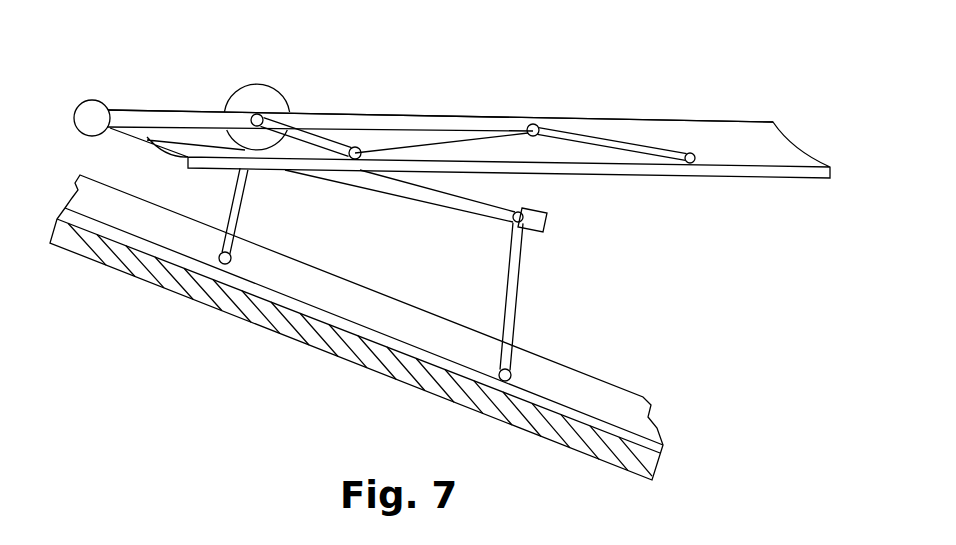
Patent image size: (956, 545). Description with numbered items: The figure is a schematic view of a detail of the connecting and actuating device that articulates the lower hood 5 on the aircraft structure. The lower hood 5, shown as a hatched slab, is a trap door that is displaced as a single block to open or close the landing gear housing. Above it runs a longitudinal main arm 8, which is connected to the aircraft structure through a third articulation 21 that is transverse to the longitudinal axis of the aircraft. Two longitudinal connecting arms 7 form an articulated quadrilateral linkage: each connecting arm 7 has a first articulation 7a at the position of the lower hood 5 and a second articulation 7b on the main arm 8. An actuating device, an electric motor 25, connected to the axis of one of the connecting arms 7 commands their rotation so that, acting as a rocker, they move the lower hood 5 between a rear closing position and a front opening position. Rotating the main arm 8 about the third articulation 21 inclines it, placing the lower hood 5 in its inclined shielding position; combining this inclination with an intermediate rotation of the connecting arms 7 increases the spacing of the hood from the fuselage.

The lower hood 5 is at (258, 315).
The connecting arm 7 is at (247, 190).
The first articulation 7a is at (355, 150).
The second articulation 7b is at (257, 115).
The main arm 8 is at (157, 113).
The third articulation 21 is at (92, 112).
The electric motor 25 is at (285, 90).